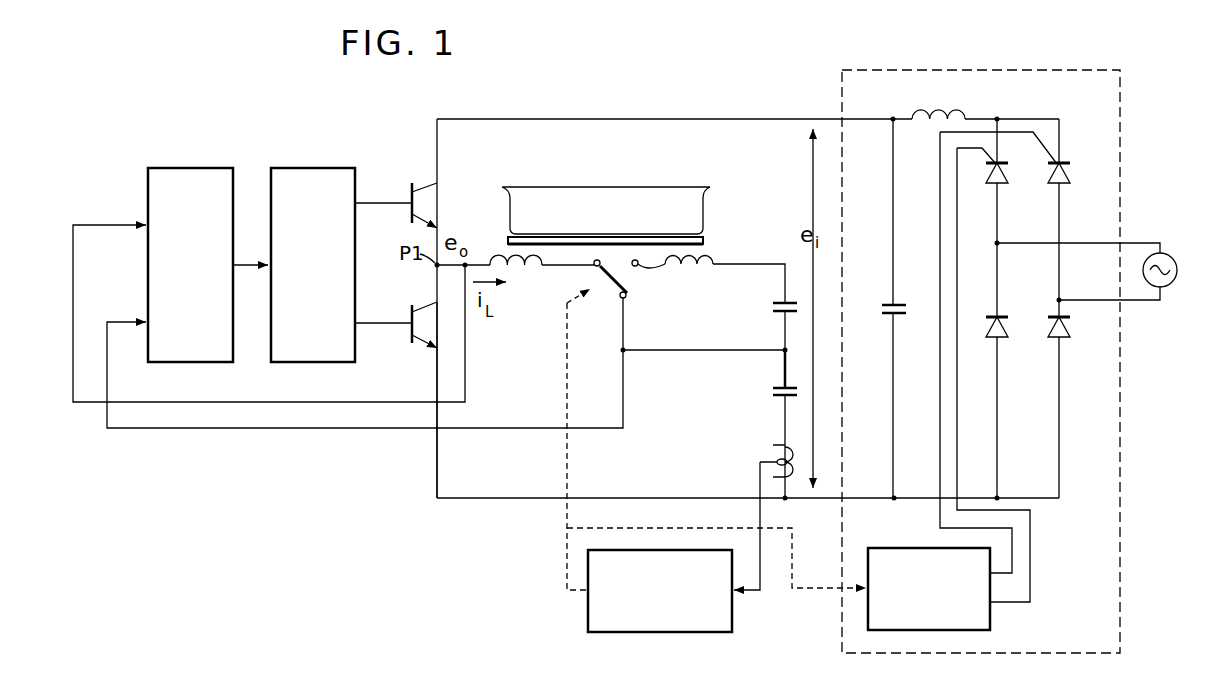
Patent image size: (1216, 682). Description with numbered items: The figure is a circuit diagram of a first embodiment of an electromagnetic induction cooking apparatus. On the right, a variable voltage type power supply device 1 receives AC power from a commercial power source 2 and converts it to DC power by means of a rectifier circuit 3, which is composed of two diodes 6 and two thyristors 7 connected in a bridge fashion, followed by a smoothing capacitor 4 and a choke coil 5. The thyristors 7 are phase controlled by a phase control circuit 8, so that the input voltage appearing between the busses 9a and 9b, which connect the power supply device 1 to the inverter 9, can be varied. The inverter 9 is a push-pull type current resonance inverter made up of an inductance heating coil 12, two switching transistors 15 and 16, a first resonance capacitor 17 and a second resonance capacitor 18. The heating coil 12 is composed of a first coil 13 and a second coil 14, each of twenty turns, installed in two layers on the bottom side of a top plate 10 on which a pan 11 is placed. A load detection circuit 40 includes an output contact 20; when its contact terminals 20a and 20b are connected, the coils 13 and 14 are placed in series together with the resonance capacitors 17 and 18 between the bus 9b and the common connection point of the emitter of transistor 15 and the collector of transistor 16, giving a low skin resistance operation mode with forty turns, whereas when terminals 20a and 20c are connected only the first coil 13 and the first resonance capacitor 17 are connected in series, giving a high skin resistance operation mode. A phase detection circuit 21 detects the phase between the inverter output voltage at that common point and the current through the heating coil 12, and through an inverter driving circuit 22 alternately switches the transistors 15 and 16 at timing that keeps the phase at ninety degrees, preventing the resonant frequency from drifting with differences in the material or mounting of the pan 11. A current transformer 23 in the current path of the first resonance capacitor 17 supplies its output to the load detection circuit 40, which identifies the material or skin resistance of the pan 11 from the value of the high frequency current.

The variable voltage type power supply device 1 is at (1042, 68).
The commercial power source 2 is at (1178, 270).
The rectifier circuit 3 is at (1034, 284).
The smoothing capacitor 4 is at (887, 313).
The choke coil 5 is at (951, 112).
The diodes 6 is at (1004, 337).
The thyristors 7 is at (1004, 183).
The phase control circuit 8 is at (890, 547).
The inverter 9 is at (445, 345).
The bus 9a is at (564, 118).
The bus 9b is at (500, 500).
The top plate 10 is at (710, 240).
The pan 11 is at (647, 186).
The inductance heating coil 12 is at (500, 247).
The first coil 13 is at (518, 293).
The second coil 14 is at (713, 262).
The switching transistor 15 is at (425, 180).
The switching transistor 16 is at (426, 302).
The first resonance capacitor 17 is at (775, 400).
The second resonance capacitor 18 is at (772, 308).
The output contact 20 is at (610, 290).
The contact terminal 20a is at (592, 278).
The contact terminal 20b is at (661, 279).
The contact terminal 20c is at (627, 298).
The phase detection circuit 21 is at (190, 167).
The inverter driving circuit 22 is at (312, 167).
The current transformer 23 is at (793, 478).
The load detection circuit 40 is at (660, 634).